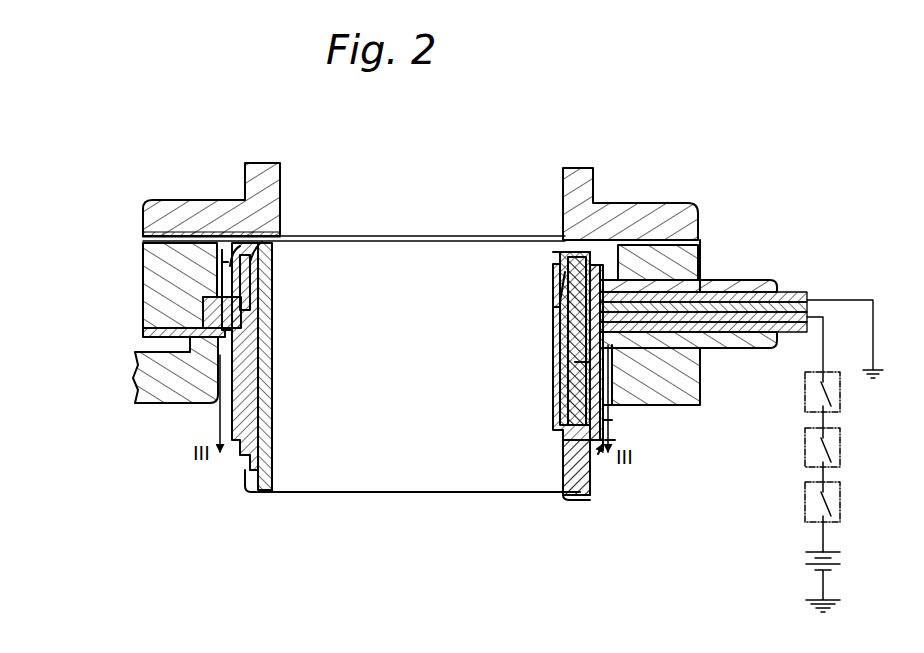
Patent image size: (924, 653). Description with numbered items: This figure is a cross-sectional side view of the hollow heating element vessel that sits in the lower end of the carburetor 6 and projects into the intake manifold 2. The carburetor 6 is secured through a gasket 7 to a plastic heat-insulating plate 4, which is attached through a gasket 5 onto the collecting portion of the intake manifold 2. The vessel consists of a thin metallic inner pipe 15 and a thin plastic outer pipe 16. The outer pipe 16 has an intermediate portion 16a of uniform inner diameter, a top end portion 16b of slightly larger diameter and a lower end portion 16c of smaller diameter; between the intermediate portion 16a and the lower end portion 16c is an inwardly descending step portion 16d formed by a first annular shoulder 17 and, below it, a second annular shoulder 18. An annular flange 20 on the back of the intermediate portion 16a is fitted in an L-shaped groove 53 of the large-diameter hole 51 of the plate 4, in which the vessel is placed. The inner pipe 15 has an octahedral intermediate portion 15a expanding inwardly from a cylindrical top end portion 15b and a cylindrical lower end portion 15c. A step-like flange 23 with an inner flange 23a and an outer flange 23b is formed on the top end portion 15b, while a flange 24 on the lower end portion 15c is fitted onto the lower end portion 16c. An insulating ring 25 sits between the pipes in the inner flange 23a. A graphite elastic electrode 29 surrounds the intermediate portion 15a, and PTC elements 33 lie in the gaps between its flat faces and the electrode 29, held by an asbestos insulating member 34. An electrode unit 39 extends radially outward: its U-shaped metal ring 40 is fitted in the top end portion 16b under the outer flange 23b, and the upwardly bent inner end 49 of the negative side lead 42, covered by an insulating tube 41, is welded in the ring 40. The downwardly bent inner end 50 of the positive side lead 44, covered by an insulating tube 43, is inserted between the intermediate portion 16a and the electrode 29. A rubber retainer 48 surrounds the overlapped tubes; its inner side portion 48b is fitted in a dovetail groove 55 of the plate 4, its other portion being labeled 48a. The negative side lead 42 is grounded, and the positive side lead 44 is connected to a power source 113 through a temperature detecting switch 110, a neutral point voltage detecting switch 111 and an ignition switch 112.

The intake manifold 2 is at (135, 382).
The heat-insulating plate 4 is at (143, 270).
The gasket 5 is at (160, 333).
The carburetor 6 is at (632, 212).
The gasket 7 is at (143, 238).
The inner pipe 15 is at (548, 422).
The intermediate portion 15a is at (556, 324).
The cylindrical top end portion 15b is at (558, 257).
The cylindrical lower end portion 15c is at (565, 472).
The outer pipe 16 is at (606, 450).
The intermediate portion 16a is at (612, 412).
The top end portion 16b is at (218, 266).
The lower end portion 16c is at (566, 500).
The step portion 16d is at (612, 450).
The first annular shoulder 17 is at (612, 427).
The second annular shoulder 18 is at (600, 452).
The annular flange 20 is at (192, 341).
The step-like flange 23 is at (248, 246).
The inner flange 23a is at (262, 206).
The outer flange 23b is at (228, 250).
The flange 24 is at (588, 494).
The insulating ring 25 is at (250, 272).
The elastic electrode 29 is at (265, 397).
The PTC element 33 is at (562, 347).
The insulating member 34 is at (262, 337).
The electrode unit 39 is at (730, 257).
The metal ring 40 is at (265, 240).
The insulating tube 41 is at (800, 298).
The negative side lead 42 is at (790, 302).
The insulating tube 43 is at (798, 334).
The positive side lead 44 is at (782, 350).
The retainer 48 is at (742, 280).
The sheath lower portion 48a is at (735, 349).
The inner side portion 48b is at (700, 278).
The inner end 49 is at (555, 302).
The inner end 50 is at (580, 368).
The large-diameter hole 51 is at (655, 245).
The groove 53 is at (215, 312).
The dovetail groove 55 is at (672, 266).
The temperature detecting switch 110 is at (840, 404).
The neutral point voltage detecting switch 111 is at (840, 445).
The ignition switch 112 is at (840, 497).
The power source 113 is at (840, 566).